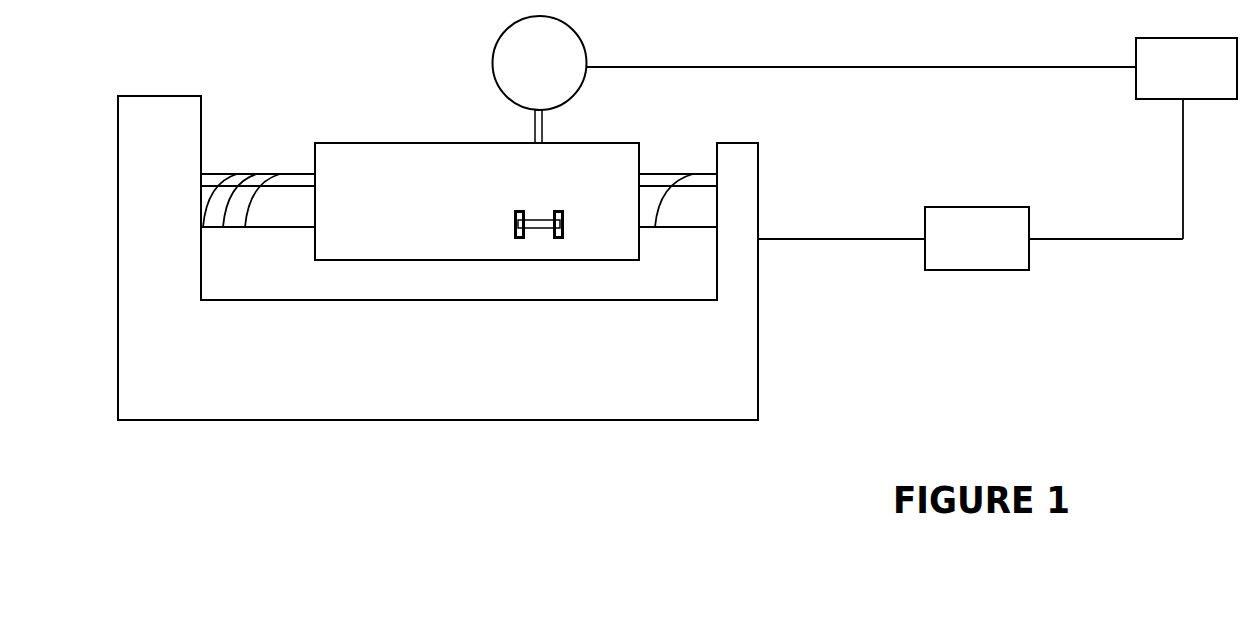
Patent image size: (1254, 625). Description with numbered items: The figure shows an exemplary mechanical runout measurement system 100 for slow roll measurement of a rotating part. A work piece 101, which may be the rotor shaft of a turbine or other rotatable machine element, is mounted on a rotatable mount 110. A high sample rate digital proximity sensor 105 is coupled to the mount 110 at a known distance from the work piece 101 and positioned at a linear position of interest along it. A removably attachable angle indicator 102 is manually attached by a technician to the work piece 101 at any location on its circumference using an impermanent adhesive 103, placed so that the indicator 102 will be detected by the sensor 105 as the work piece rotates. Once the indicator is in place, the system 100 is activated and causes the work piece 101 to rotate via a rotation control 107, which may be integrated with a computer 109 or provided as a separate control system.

The mechanical runout measurement system 100 is at (568, 487).
The work piece 101 is at (358, 173).
The removably attachable angle indicator 102 is at (541, 212).
The impermanent adhesive 103 is at (571, 215).
The high sample rate digital proximity sensor 105 is at (560, 76).
The rotation control 107 is at (957, 255).
The computer 109 is at (1169, 79).
The rotatable mount 110 is at (130, 412).